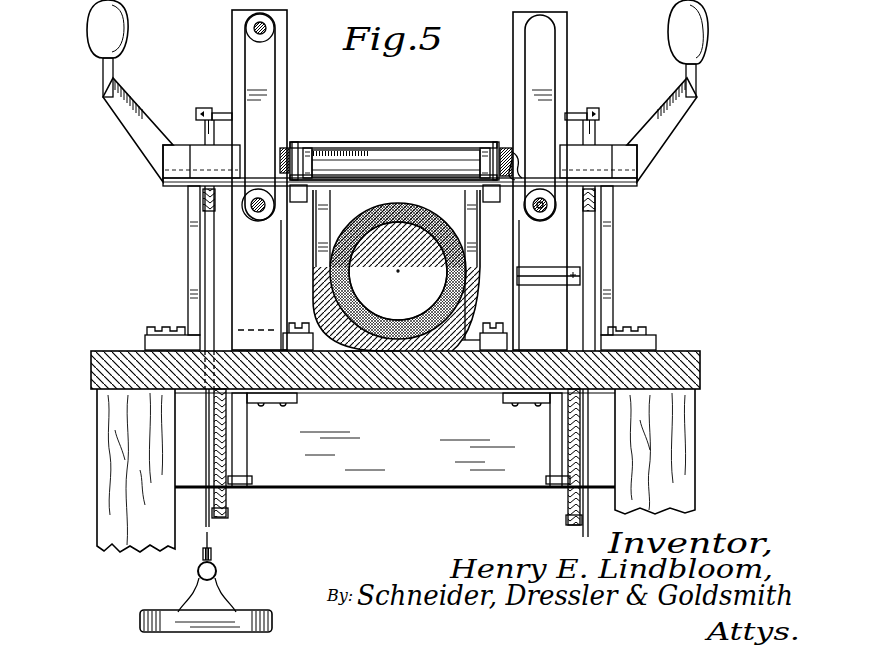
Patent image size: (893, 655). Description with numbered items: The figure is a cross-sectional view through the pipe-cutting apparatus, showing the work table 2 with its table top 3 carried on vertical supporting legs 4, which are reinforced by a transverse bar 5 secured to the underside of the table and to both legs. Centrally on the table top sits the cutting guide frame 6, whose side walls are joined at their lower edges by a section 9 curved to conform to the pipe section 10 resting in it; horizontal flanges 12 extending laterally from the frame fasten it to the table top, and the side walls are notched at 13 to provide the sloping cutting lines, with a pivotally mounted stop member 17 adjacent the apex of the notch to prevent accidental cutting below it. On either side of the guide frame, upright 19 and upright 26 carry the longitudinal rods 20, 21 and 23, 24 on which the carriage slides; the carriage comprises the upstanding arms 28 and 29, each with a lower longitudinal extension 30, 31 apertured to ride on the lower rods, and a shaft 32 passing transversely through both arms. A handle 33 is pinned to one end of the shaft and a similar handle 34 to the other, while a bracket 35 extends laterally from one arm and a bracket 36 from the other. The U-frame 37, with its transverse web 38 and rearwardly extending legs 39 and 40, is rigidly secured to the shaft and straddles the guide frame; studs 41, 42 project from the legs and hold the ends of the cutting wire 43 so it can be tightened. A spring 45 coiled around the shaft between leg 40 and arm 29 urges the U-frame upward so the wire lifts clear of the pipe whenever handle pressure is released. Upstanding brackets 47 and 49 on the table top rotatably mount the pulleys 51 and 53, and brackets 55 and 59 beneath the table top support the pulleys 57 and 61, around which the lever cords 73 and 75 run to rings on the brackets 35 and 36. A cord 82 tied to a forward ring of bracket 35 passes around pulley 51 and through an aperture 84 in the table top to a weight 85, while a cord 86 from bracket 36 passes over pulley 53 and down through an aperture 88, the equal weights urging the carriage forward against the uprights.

The work table 2 is at (90, 370).
The table top 3 is at (433, 390).
The vertical supporting legs 4 is at (100, 432).
The bar 5 is at (388, 487).
The cutting guide frame 6 is at (353, 344).
The section 9 is at (391, 342).
The pipe section 10 is at (443, 212).
The horizontal flanges 12 is at (321, 350).
The notch 13 is at (345, 271).
The stop member 17 is at (583, 272).
The upright 19 is at (232, 30).
The longitudinal rod 20 is at (275, 27).
The longitudinal rod 21 is at (331, 258).
The longitudinal rod 23 is at (567, 28).
The longitudinal rod 24 is at (537, 214).
The upright 26 is at (567, 47).
The upstanding arm 28 is at (276, 67).
The upstanding arm 29 is at (527, 72).
The longitudinal extension 30 is at (256, 216).
The longitudinal extension 31 is at (553, 216).
The shaft 32 is at (373, 160).
The handle 33 is at (106, 92).
The handle 34 is at (690, 100).
The bracket 35 is at (218, 107).
The bracket 36 is at (578, 110).
The U-frame 37 is at (343, 141).
The transverse web 38 is at (425, 142).
The leg 39 is at (300, 203).
The leg 40 is at (493, 204).
The stud 41 is at (280, 161).
The stud 42 is at (507, 160).
The cutting wire 43 is at (374, 181).
The spring 45 is at (521, 180).
The upstanding bracket 47 is at (188, 278).
The upstanding bracket 49 is at (598, 297).
The pulley 51 is at (205, 130).
The pulley 53 is at (598, 128).
The bracket 55 is at (242, 421).
The pulley 57 is at (227, 504).
The bracket 59 is at (550, 420).
The pulley 61 is at (566, 500).
The cord 73 is at (228, 519).
The cord 75 is at (578, 513).
The cord 82 is at (205, 496).
The aperture 84 is at (216, 369).
The weight 85 is at (150, 612).
The cord 86 is at (590, 444).
The aperture 88 is at (646, 353).